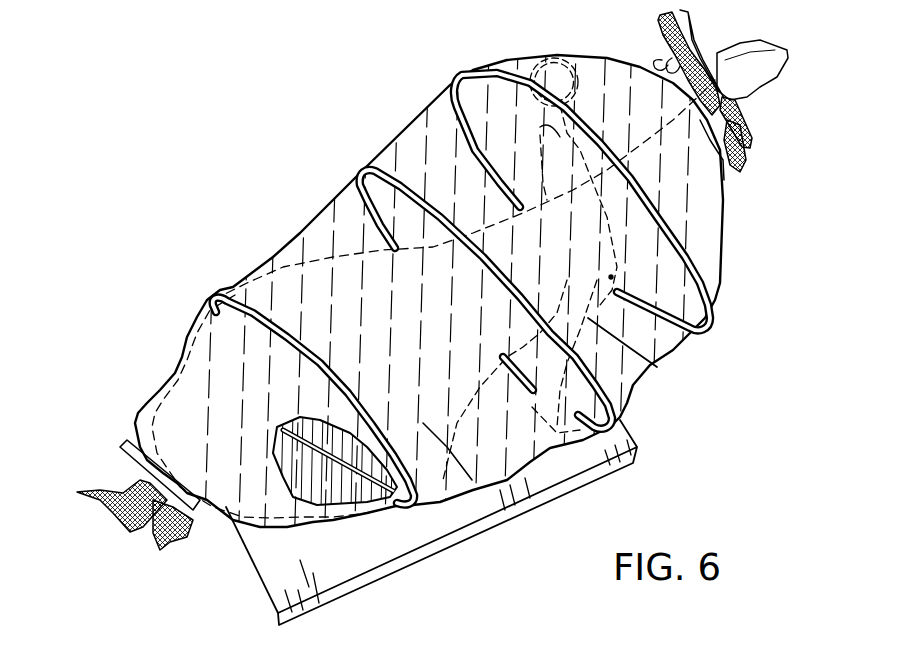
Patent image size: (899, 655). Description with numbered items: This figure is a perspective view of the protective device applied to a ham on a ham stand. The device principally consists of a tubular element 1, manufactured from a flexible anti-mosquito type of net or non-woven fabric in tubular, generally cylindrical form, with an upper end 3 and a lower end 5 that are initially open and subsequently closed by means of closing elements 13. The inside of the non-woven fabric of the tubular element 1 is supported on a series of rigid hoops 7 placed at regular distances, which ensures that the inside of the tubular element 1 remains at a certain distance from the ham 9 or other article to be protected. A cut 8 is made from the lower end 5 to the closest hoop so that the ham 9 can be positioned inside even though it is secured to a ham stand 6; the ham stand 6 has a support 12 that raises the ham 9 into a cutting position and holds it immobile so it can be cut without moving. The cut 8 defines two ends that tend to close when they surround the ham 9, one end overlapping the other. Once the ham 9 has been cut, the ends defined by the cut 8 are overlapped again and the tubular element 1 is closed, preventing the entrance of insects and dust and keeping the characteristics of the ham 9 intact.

The tubular element 1 is at (720, 250).
The upper end 3 is at (750, 130).
The lower end 5 is at (133, 518).
The ham stand 6 is at (593, 480).
The rigid hoops 7 is at (710, 310).
The cut 8 is at (345, 510).
The ham 9 is at (477, 470).
The support 12 is at (653, 368).
The closing elements 13 is at (737, 175).